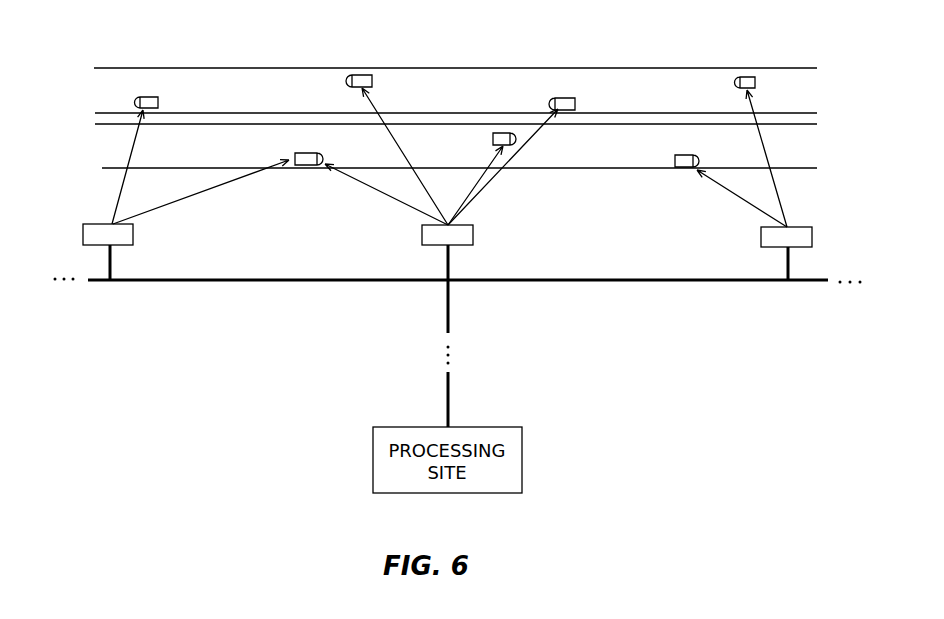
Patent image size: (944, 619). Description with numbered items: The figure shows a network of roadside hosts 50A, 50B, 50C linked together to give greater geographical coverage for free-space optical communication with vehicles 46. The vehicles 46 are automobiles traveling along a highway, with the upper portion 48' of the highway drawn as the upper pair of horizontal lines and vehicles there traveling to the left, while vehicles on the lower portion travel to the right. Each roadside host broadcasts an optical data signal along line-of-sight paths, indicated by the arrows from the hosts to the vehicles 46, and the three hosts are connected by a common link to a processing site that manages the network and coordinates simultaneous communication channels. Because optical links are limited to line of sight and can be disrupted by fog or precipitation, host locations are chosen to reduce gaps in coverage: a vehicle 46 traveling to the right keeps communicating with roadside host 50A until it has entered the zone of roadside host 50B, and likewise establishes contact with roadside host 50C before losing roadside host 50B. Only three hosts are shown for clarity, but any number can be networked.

The vehicle 46 is at (143, 97).
The upper portion of highway 48' is at (433, 81).
The roadside host 50A is at (133, 233).
The roadside host 50B is at (422, 232).
The roadside host 50C is at (761, 233).